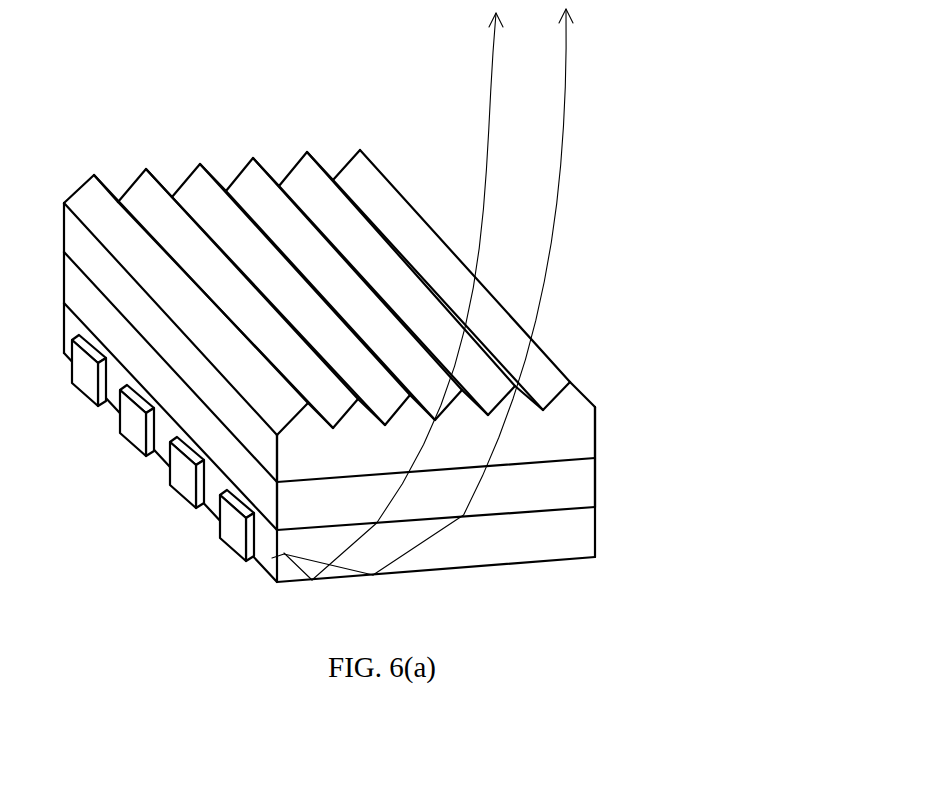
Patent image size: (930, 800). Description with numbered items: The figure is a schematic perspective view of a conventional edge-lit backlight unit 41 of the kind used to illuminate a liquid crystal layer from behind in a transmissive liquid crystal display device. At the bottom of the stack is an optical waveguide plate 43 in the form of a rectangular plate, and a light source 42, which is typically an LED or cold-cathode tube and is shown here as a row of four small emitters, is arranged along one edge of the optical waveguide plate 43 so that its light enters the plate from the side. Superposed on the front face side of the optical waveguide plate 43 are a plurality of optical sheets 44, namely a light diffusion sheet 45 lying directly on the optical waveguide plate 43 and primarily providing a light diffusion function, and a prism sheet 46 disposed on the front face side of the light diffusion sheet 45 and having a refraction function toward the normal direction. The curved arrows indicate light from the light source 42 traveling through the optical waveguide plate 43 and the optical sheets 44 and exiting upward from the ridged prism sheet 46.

The edge-lit backlight unit 41 is at (618, 77).
The light source 42 is at (82, 367).
The optical waveguide plate 43 is at (578, 542).
The optical sheets 44 is at (677, 420).
The light diffusion sheet 45 is at (578, 490).
The prism sheet 46 is at (578, 440).